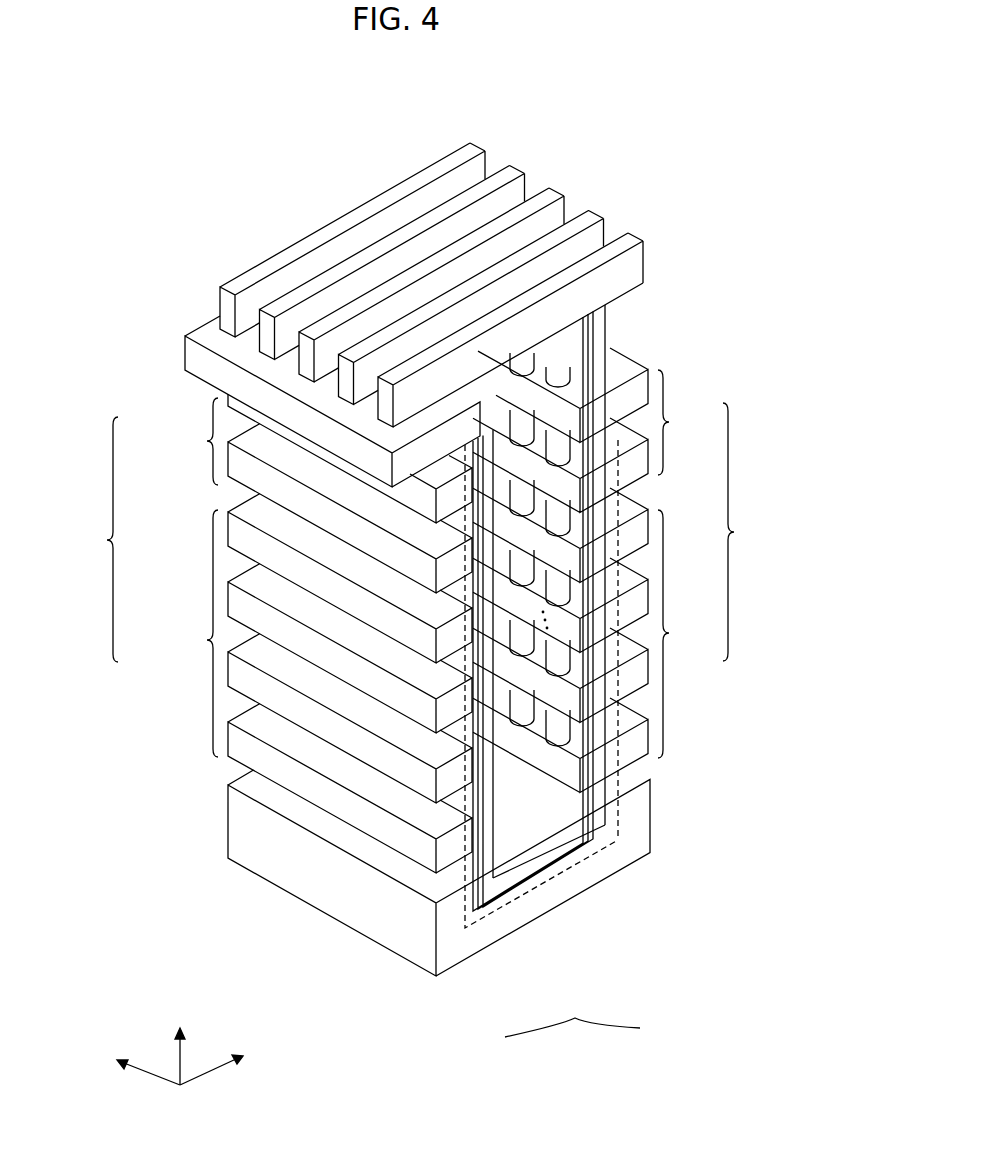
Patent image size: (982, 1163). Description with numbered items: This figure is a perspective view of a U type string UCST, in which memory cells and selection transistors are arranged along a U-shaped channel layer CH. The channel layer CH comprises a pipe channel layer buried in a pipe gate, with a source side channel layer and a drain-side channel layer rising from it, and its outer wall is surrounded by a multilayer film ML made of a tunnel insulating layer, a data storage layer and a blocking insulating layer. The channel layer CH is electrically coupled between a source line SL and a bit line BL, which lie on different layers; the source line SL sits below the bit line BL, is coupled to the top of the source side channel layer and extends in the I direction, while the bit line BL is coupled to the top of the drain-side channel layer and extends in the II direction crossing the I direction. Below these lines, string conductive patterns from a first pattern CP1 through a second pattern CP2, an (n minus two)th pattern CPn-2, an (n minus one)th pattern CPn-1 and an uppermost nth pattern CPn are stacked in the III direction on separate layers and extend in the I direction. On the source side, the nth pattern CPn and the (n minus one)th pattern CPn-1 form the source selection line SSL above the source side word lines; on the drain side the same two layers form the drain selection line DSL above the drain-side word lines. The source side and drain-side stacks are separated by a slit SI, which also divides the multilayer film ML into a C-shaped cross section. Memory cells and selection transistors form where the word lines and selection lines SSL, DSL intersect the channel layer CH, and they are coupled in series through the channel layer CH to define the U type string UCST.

The bit line BL is at (632, 263).
The source line SL is at (458, 402).
The slit SI is at (515, 448).
The source selection line SSL is at (206, 441).
The drain selection line DSL is at (686, 422).
The nth string conductive pattern CPn is at (438, 435).
The (n-1)th string conductive pattern CPn-1 is at (438, 505).
The (n-2)th string conductive pattern CPn-2 is at (438, 575).
The second string conductive pattern CP2 is at (438, 715).
The first string conductive pattern CP1 is at (438, 785).
The U type string UCST is at (628, 778).
The multilayer film ML is at (479, 880).
The channel layer CH is at (572, 1035).
The I direction I is at (138, 1061).
The II direction II is at (222, 1062).
The III direction III is at (179, 1043).